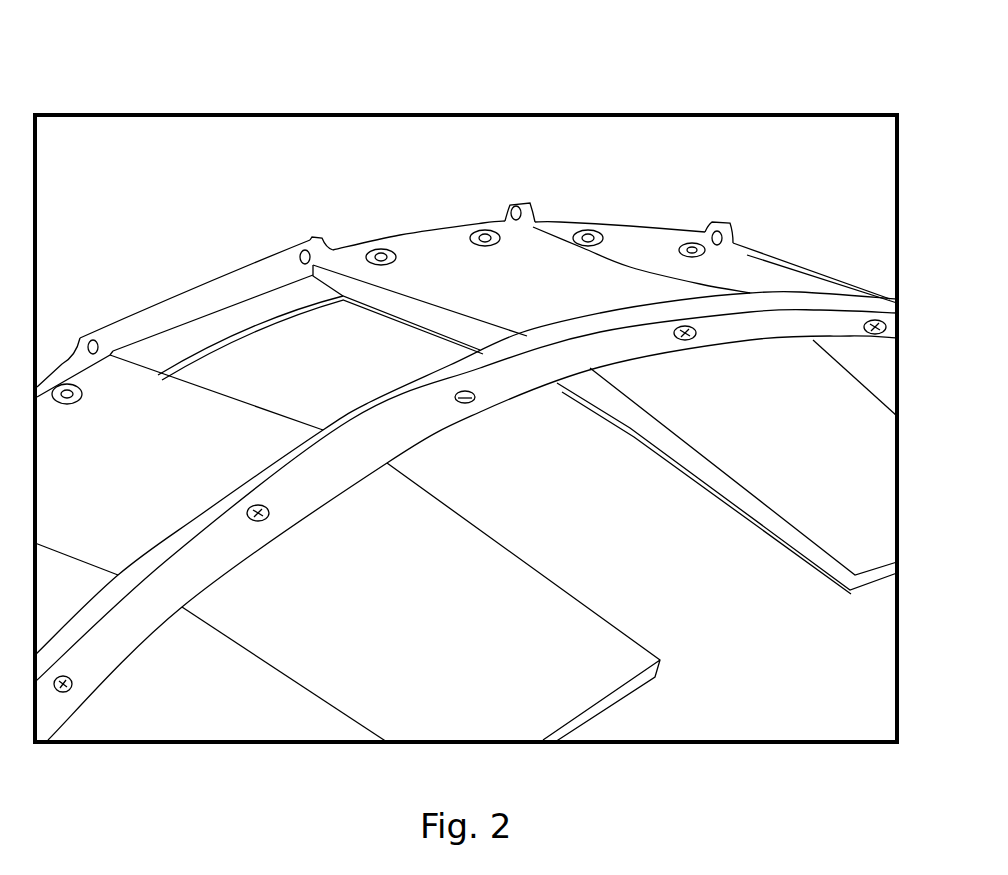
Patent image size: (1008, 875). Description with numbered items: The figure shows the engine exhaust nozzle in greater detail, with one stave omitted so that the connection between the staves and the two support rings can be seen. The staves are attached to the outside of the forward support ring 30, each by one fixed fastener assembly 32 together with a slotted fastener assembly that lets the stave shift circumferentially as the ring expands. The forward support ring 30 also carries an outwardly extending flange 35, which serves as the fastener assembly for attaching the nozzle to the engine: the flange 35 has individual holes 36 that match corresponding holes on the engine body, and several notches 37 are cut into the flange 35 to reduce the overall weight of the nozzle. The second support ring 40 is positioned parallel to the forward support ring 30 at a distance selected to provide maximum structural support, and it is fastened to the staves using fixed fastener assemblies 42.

The forward support ring 30 is at (238, 310).
The fixed fastener assembly 32 is at (487, 225).
The outwardly extending flange 35 is at (277, 263).
The hole 36 is at (513, 203).
The notch 37 is at (648, 217).
The second support ring 40 is at (808, 310).
The fixed fastener assembly 42 is at (686, 325).